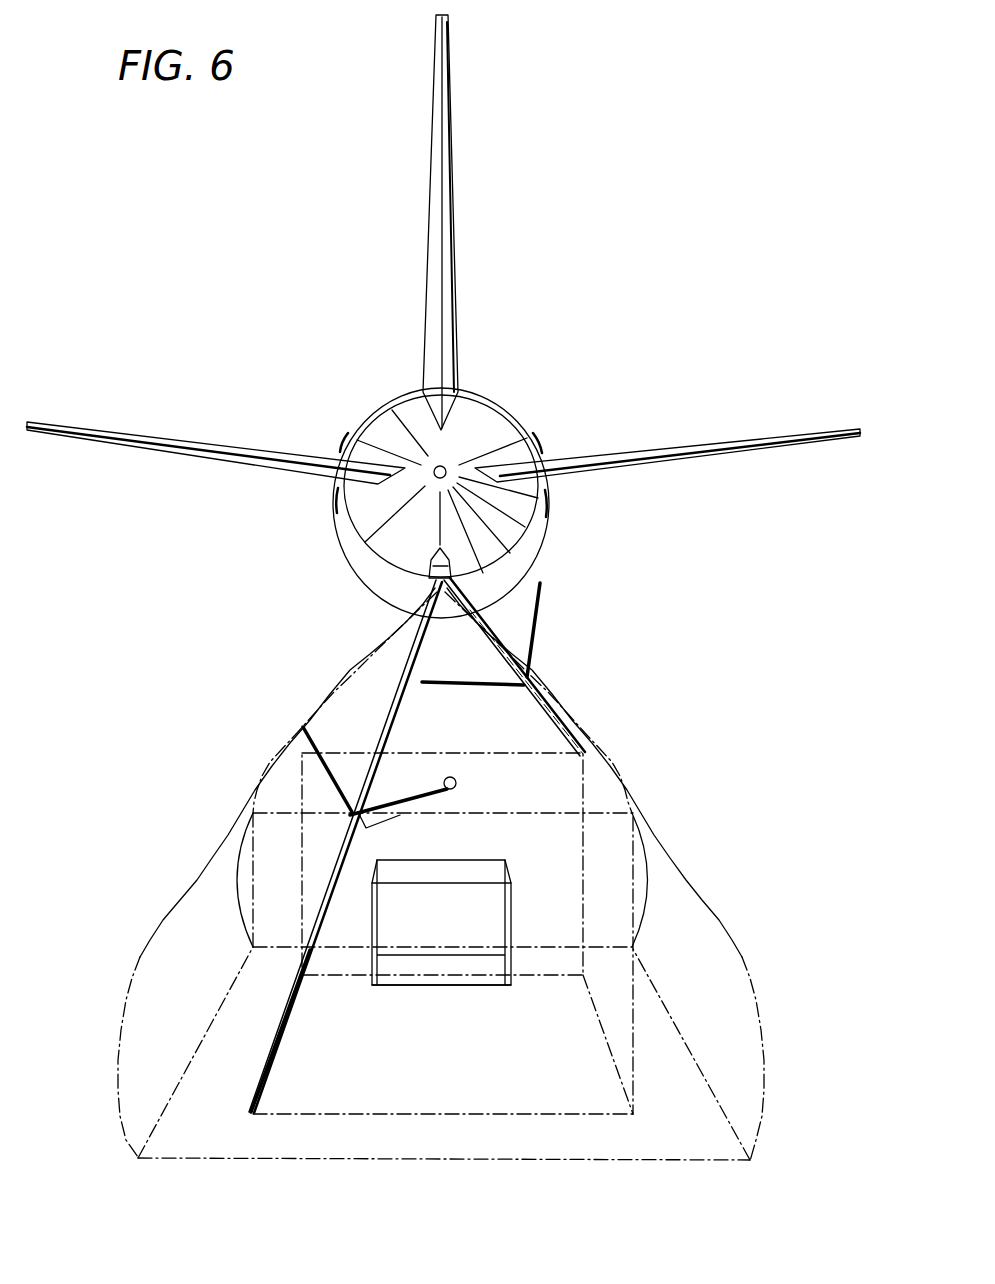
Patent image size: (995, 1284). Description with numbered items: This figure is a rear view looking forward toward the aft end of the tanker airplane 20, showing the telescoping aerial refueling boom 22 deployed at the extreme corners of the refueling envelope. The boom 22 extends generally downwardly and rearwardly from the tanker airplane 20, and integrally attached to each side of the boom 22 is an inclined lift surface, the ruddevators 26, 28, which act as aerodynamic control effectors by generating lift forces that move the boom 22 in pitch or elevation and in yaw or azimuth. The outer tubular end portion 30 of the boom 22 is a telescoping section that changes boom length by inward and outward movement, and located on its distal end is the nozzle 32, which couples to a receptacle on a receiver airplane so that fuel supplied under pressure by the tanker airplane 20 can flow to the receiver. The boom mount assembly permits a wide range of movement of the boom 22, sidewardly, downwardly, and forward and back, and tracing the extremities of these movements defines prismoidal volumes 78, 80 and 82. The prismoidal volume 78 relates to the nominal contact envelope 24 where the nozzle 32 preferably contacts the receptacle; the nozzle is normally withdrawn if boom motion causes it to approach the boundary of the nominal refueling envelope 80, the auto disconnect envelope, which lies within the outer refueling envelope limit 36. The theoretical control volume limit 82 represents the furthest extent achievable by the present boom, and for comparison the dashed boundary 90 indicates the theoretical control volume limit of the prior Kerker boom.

The tanker airplane 20 is at (511, 390).
The telescoping aerial refueling boom 22 is at (397, 688).
The nominal refueling contact envelope 24 is at (425, 987).
The ruddevator 26 is at (548, 597).
The ruddevator 28 is at (303, 733).
The outer tubular end portion 30 is at (290, 992).
The nozzle 32 is at (578, 742).
The outer refueling envelope limit 36 is at (470, 1110).
The prismoidal volume 78 is at (448, 920).
The nominal refueling envelope 80 is at (598, 1091).
The theoretical control volume limit 82 is at (665, 905).
The theoretical control volume limit boundary of the Kerker boom 90 is at (748, 966).